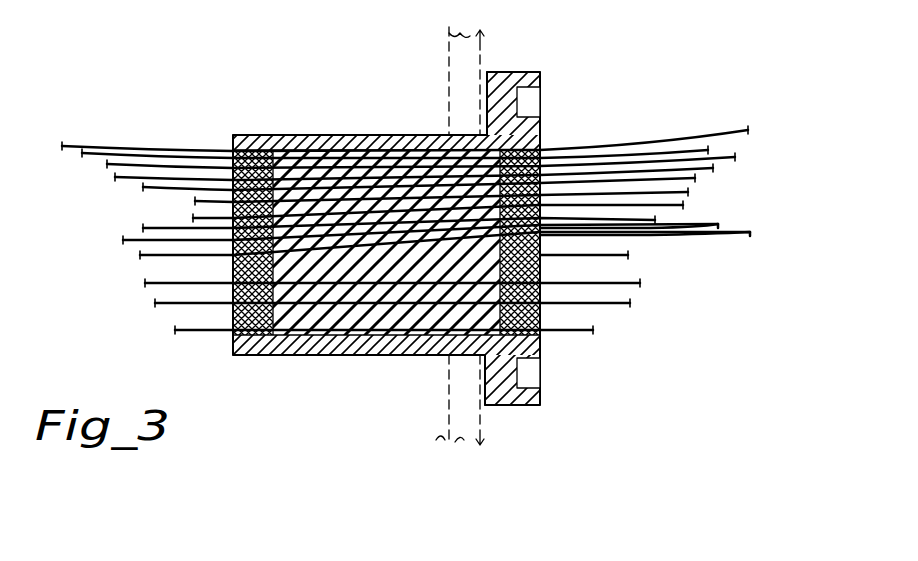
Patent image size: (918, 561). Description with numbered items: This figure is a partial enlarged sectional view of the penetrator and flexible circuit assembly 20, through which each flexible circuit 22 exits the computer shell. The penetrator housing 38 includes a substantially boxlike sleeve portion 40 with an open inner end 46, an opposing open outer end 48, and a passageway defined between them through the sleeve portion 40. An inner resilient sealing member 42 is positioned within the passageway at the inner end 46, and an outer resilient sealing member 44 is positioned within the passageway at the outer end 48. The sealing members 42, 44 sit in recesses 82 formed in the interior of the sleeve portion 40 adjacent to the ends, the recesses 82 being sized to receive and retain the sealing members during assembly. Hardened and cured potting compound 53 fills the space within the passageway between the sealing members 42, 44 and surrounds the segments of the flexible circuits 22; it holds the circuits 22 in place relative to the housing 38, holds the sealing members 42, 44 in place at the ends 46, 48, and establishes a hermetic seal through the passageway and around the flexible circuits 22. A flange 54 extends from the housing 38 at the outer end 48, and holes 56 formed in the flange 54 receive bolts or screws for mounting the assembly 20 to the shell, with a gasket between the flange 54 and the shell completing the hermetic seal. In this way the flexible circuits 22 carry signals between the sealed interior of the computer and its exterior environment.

The penetrator and flexible circuit assembly 20 is at (703, 82).
The flexible circuit 22 is at (702, 236).
The penetrator housing 38 is at (430, 355).
The sleeve portion 40 is at (280, 135).
The inner resilient sealing member 42 is at (245, 265).
The outer resilient sealing member 44 is at (540, 263).
The inner end 46 is at (187, 170).
The outer end 48 is at (545, 150).
The potting compound 53 is at (325, 313).
The flange 54 is at (520, 72).
The holes 56 is at (525, 100).
The recesses 82 is at (438, 135).